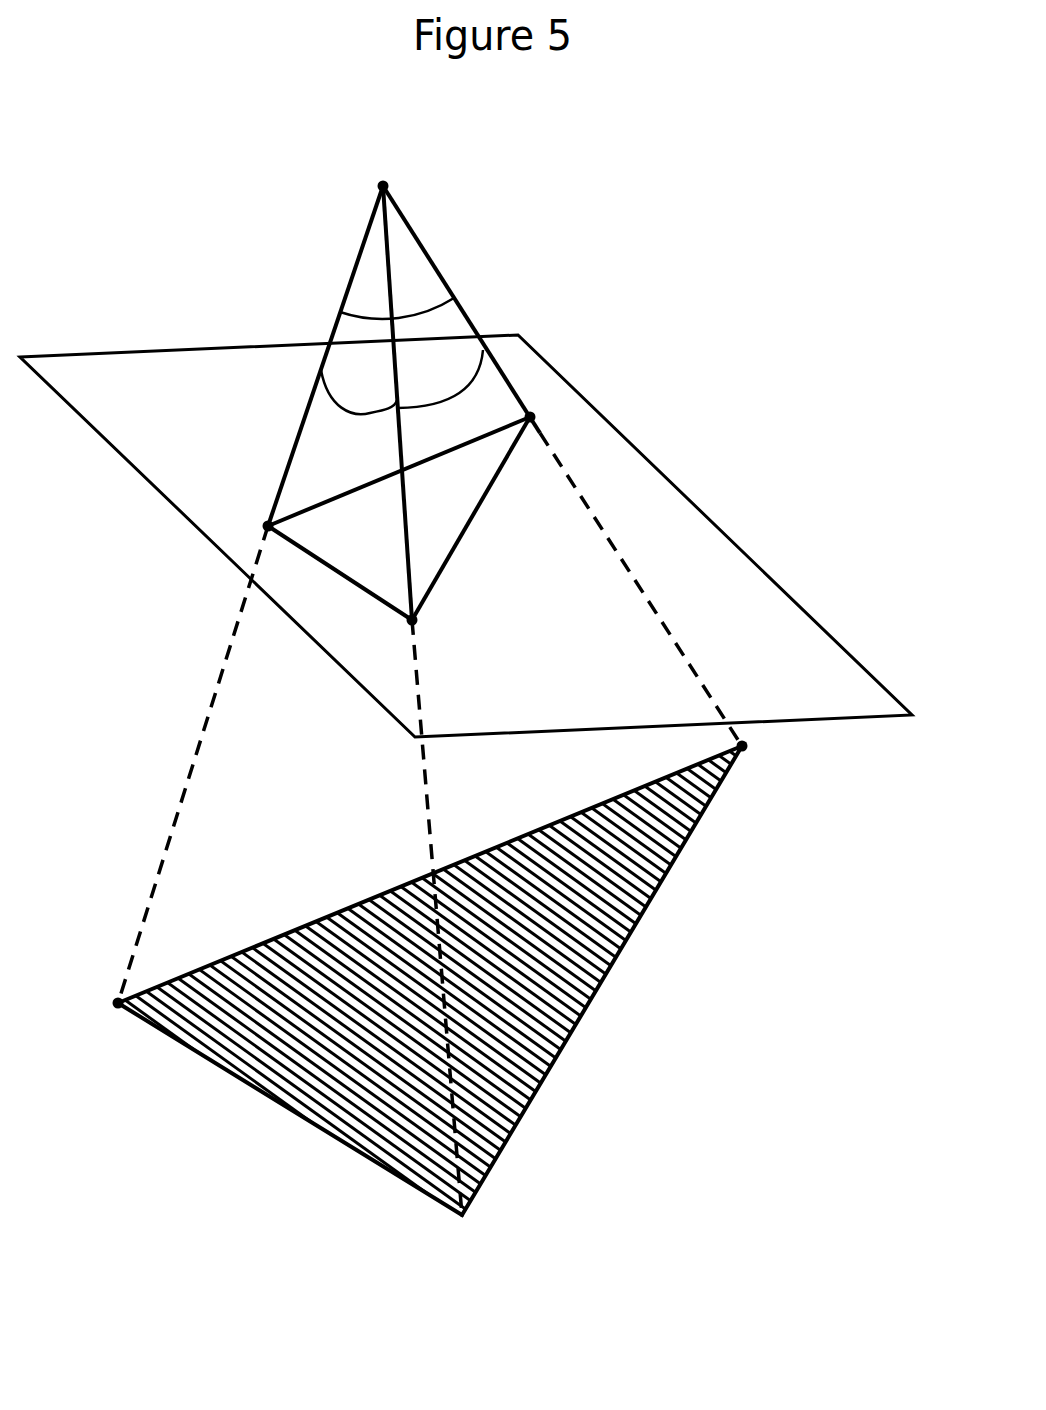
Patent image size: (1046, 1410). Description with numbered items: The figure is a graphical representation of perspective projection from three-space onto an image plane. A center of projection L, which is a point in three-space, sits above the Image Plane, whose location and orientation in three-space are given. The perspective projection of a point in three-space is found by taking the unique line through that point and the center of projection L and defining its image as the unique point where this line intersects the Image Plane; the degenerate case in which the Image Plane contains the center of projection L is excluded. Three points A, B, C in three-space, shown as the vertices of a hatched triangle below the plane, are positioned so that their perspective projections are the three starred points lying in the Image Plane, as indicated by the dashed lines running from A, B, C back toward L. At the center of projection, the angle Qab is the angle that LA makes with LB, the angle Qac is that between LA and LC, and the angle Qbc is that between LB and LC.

The center of projection L is at (404, 387).
The image plane Image Plane is at (722, 511).
The point A is at (447, 848).
The point B is at (461, 926).
The point C is at (186, 767).
The angle Qac is at (435, 298).
The angle Qab is at (492, 379).
The angle Qbc is at (325, 408).